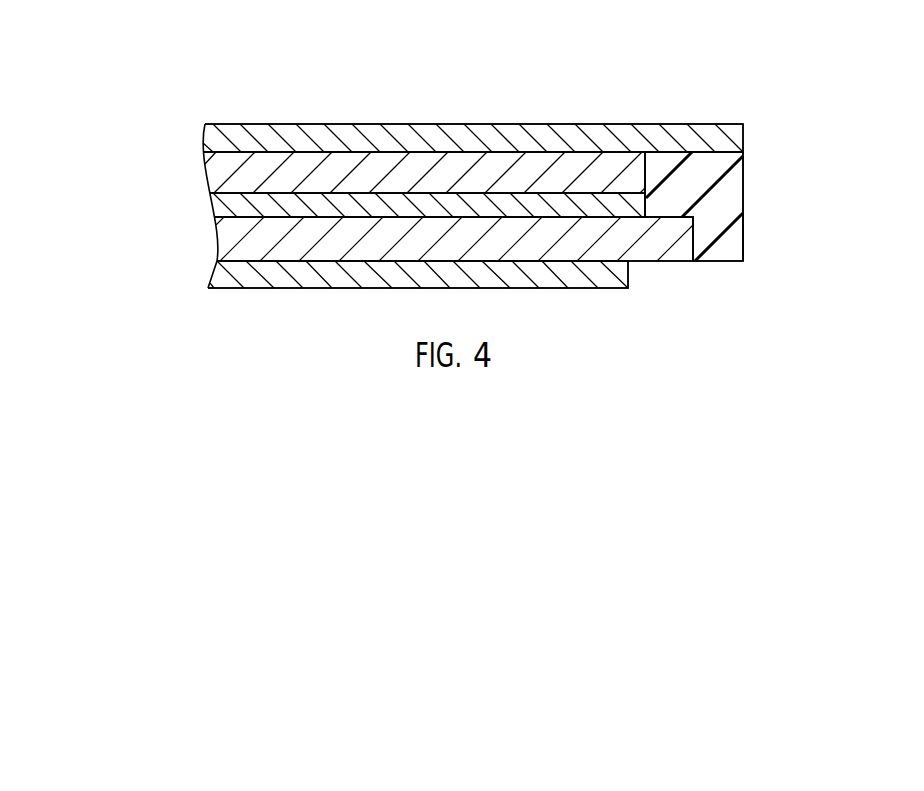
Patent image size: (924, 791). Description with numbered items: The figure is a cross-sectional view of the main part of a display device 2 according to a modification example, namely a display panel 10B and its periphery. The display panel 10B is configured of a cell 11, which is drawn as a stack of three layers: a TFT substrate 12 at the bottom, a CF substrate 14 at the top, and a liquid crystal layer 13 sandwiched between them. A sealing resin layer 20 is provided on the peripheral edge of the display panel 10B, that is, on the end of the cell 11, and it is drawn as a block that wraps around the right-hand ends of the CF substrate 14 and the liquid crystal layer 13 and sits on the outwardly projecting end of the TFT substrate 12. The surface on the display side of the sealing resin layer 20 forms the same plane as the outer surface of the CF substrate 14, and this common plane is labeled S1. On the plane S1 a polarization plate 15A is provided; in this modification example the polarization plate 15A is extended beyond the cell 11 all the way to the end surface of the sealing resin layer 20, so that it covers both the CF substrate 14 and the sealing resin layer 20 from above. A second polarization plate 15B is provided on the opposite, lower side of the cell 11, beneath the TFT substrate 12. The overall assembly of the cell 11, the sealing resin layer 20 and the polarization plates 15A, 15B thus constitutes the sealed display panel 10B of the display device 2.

The display device 2 is at (705, 77).
The polarization plate 15A is at (202, 142).
The CF substrate 14 is at (203, 177).
The liquid crystal layer 13 is at (207, 208).
The TFT substrate 12 is at (227, 237).
The cell 11 is at (100, 158).
The polarization plate 15B is at (207, 275).
The sealing resin layer 20 is at (733, 203).
The plane S1 is at (746, 152).
The display panel 10B is at (804, 238).